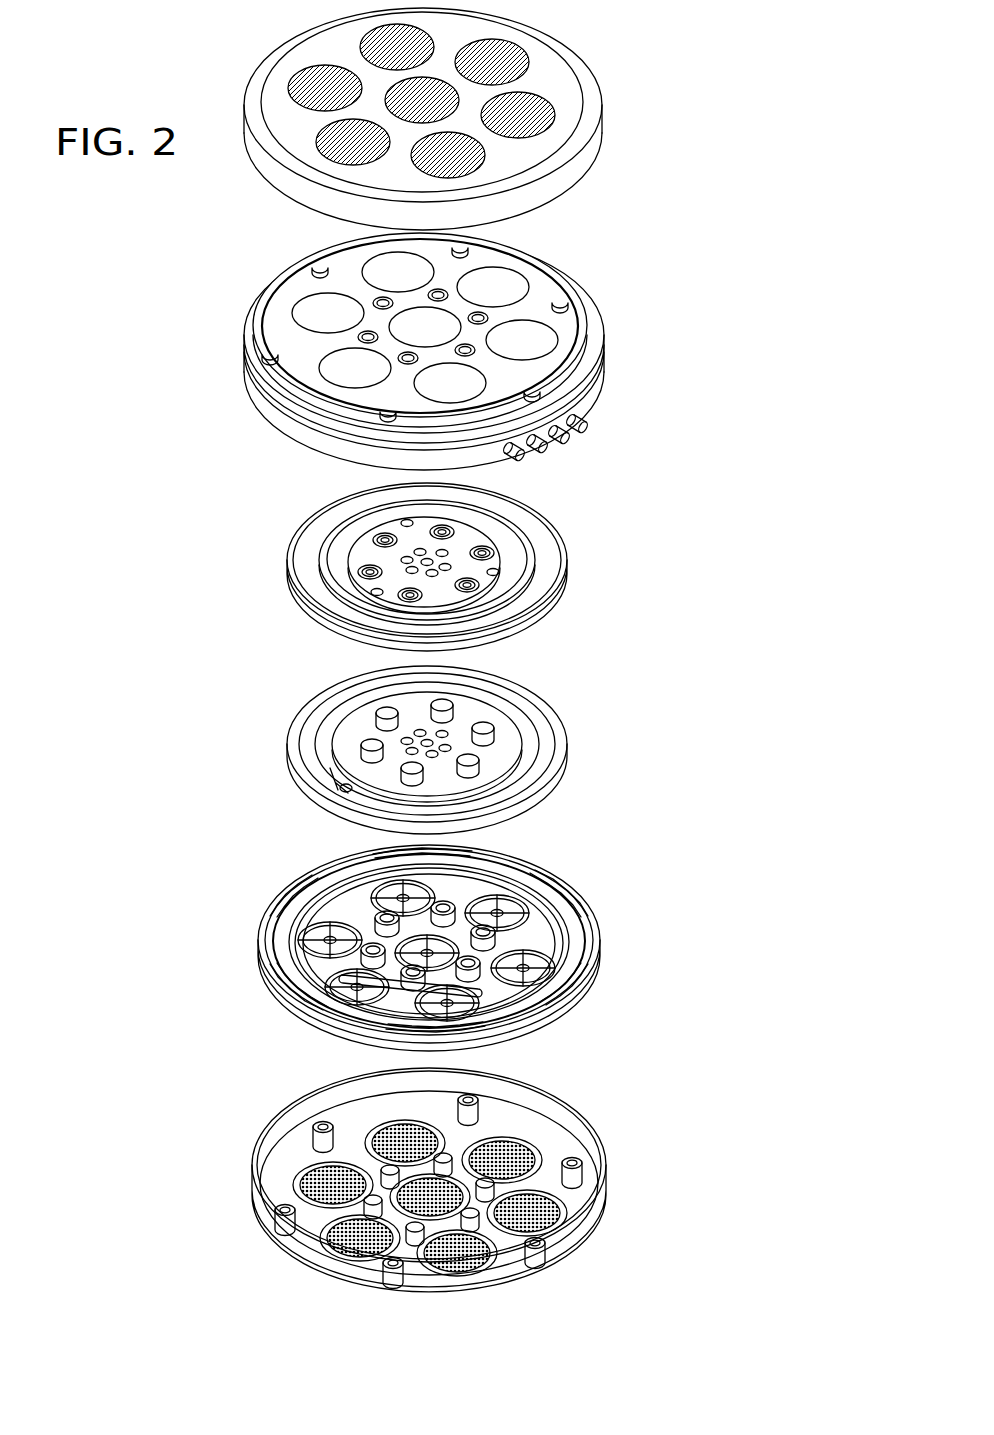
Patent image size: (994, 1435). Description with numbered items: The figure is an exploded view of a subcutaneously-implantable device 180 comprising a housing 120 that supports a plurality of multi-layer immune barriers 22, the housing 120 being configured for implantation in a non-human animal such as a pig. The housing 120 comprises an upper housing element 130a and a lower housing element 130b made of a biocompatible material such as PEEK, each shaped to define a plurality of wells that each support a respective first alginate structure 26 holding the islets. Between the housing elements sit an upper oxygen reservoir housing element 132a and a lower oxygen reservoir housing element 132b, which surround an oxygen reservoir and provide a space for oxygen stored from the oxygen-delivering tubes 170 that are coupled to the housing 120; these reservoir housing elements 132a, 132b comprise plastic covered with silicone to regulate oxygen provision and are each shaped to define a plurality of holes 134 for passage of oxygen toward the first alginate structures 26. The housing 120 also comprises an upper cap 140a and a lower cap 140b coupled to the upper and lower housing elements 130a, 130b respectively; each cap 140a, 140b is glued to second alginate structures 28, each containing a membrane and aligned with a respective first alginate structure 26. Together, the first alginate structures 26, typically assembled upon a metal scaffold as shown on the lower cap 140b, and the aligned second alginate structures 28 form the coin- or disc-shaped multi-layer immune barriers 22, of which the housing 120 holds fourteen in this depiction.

The subcutaneously-implantable device 180 is at (193, 448).
The housing 120 is at (223, 28).
The upper cap 140a is at (310, 37).
The second alginate structures 28 is at (528, 115).
The upper housing element 130a is at (312, 437).
The first alginate structures 26 is at (533, 340).
The oxygen-delivering tubes 170 is at (570, 423).
The upper oxygen reservoir housing element 132a is at (545, 575).
The holes 134 is at (450, 563).
The lower oxygen reservoir housing element 132b is at (550, 765).
The lower housing element 130b is at (598, 930).
The lower cap 140b is at (308, 1106).
The multi-layer immune barriers 22 is at (540, 1190).